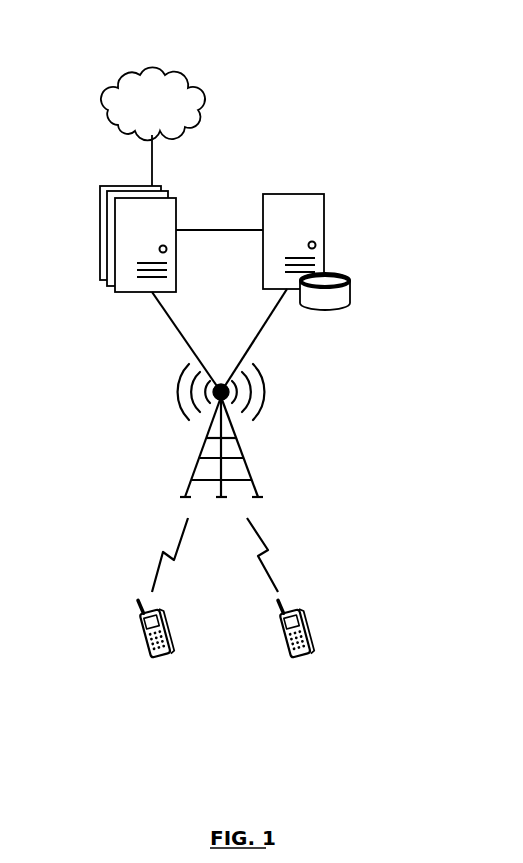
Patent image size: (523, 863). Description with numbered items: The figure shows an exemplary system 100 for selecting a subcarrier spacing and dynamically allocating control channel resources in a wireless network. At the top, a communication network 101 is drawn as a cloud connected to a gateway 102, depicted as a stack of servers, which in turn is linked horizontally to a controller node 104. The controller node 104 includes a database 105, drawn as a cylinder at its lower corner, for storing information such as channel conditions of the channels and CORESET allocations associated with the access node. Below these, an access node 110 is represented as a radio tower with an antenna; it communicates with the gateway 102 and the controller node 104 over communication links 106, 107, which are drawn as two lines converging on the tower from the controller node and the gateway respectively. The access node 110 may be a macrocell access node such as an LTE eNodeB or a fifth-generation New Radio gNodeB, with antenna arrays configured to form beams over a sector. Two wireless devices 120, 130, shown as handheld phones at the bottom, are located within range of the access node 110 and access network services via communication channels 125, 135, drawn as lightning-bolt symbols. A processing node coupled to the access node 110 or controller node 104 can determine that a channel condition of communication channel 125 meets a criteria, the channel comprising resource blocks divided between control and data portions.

The system 100 is at (336, 48).
The communication network 101 is at (165, 112).
The gateway 102 is at (118, 186).
The controller node 104 is at (322, 194).
The database 105 is at (346, 275).
The communication link 106 is at (264, 326).
The communication link 107 is at (168, 320).
The access node 110 is at (199, 466).
The wireless device 120 is at (147, 655).
The communication channel 125 is at (163, 562).
The wireless device 130 is at (291, 655).
The communication channel 135 is at (270, 565).